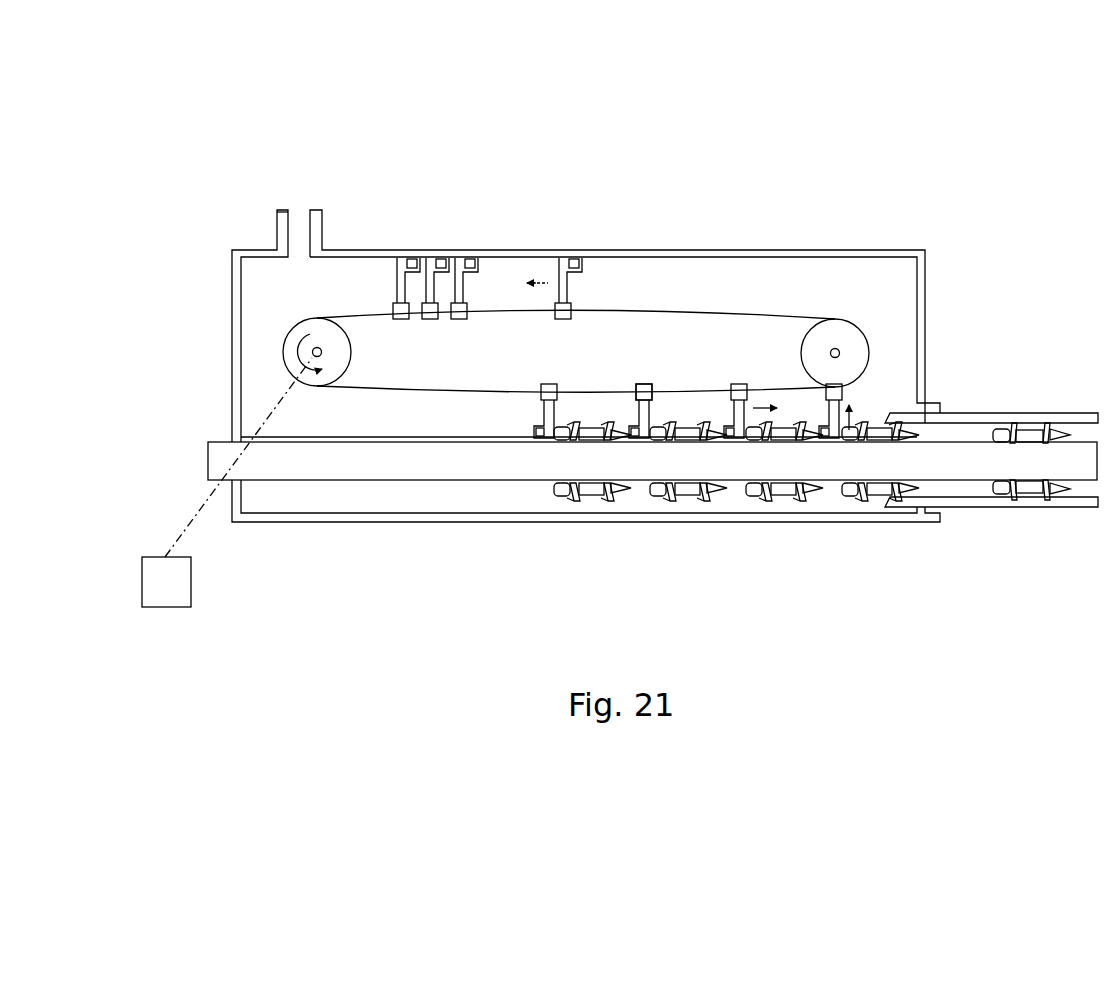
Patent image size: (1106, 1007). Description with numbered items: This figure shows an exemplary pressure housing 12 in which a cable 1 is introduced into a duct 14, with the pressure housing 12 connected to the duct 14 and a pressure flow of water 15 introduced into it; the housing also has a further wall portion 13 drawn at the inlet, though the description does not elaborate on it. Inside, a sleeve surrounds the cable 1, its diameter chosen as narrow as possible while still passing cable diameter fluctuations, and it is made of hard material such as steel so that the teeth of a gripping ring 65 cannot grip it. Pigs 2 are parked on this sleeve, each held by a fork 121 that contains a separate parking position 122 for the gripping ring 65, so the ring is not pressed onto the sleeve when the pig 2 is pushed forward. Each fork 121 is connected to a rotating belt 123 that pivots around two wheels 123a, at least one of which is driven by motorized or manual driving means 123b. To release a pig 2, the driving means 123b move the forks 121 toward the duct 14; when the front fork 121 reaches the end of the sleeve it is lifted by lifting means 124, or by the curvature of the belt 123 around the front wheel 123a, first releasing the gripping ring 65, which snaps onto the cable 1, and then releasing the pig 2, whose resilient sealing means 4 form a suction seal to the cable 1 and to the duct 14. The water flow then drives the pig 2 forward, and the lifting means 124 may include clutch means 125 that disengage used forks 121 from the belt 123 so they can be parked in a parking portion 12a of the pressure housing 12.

The cable 1 is at (652, 461).
The pig 2 is at (1033, 426).
The resilient sealing means 4 is at (1008, 426).
The pressure housing 12 is at (765, 250).
The parking portion 12a is at (338, 288).
The chimney wall 13 is at (278, 233).
The duct 14 is at (962, 414).
The pressure flow of water 15 is at (298, 221).
The gripping ring 65 is at (737, 435).
The fork 121 is at (653, 403).
The parking position 122 is at (640, 433).
The rotating belt 123 is at (613, 310).
The wheel 123a is at (327, 335).
The driving means 123b is at (183, 580).
The lifting means 124 is at (642, 382).
The clutch means 125 is at (432, 320).